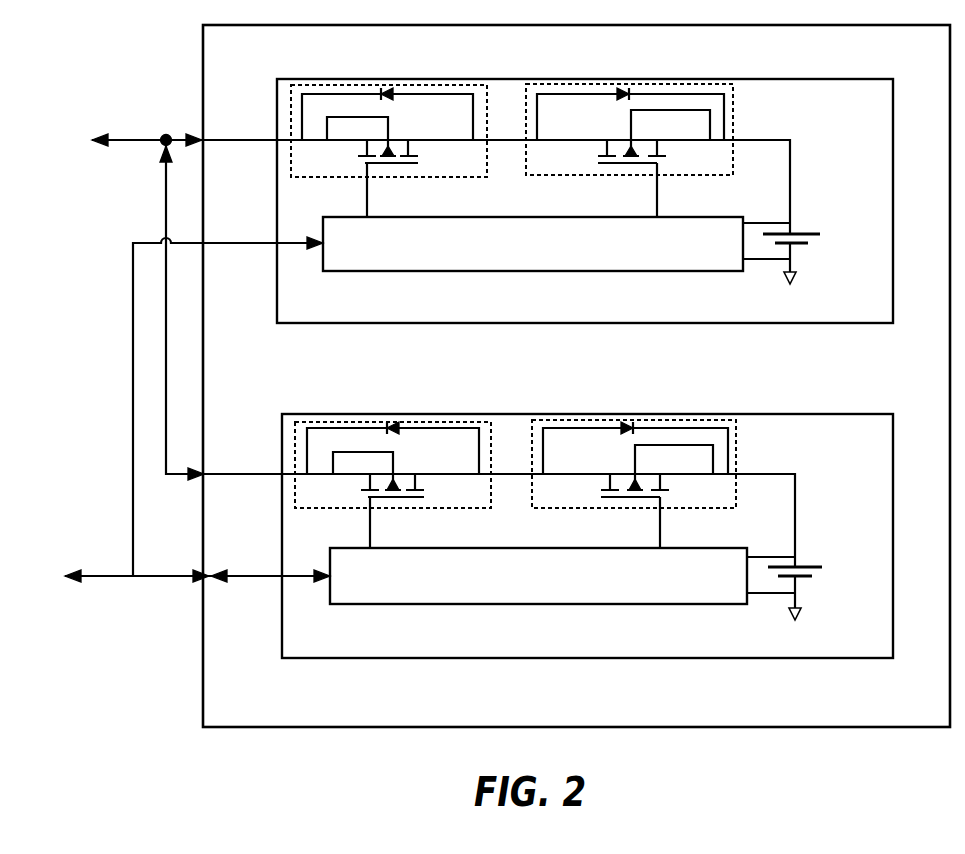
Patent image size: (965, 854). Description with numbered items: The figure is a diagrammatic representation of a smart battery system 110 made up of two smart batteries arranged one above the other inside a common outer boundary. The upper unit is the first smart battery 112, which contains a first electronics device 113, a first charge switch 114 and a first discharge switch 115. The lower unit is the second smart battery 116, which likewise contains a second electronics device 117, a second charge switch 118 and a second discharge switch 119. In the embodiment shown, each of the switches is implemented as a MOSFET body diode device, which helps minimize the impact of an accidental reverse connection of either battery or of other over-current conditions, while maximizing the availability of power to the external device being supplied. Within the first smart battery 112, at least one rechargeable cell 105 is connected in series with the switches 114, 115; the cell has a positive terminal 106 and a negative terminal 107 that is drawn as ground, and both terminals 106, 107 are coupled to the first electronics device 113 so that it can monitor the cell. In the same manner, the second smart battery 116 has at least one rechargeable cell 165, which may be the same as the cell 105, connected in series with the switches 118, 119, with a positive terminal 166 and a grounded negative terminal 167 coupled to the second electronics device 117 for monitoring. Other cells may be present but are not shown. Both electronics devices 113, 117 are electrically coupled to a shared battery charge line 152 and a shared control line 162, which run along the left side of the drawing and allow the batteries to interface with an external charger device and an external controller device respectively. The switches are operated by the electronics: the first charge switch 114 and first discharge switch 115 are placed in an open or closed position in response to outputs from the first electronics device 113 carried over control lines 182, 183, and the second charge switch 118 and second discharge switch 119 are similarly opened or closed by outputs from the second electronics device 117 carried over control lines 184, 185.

The smart battery system 110 is at (576, 376).
The first smart battery 112 is at (585, 201).
The first electronics device 113 is at (533, 244).
The first charge switch 114 is at (445, 178).
The first discharge switch 115 is at (735, 140).
The second smart battery 116 is at (587, 536).
The second electronics device 117 is at (538, 576).
The second charge switch 118 is at (447, 509).
The second discharge switch 119 is at (738, 473).
The rechargeable cell 105 is at (810, 233).
The positive terminal 106 is at (768, 222).
The negative terminal 107 is at (757, 262).
The rechargeable cell 165 is at (815, 567).
The positive terminal 166 is at (767, 557).
The negative terminal 167 is at (757, 596).
The battery charge line 152 is at (150, 140).
The control line 162 is at (117, 578).
The control line 182 is at (367, 198).
The control line 183 is at (657, 198).
The control line 184 is at (370, 536).
The control line 185 is at (660, 536).